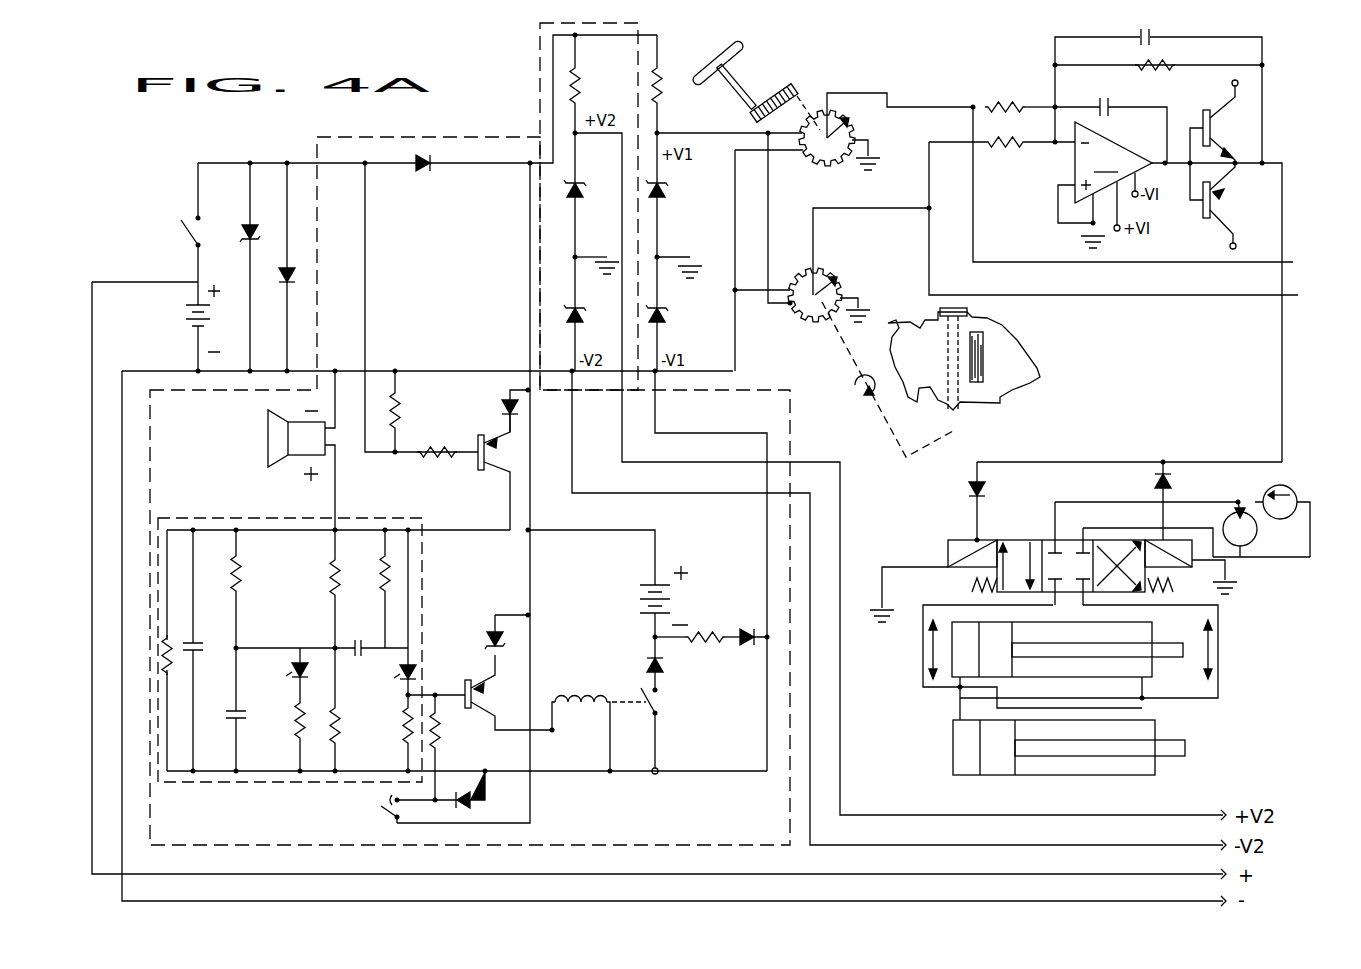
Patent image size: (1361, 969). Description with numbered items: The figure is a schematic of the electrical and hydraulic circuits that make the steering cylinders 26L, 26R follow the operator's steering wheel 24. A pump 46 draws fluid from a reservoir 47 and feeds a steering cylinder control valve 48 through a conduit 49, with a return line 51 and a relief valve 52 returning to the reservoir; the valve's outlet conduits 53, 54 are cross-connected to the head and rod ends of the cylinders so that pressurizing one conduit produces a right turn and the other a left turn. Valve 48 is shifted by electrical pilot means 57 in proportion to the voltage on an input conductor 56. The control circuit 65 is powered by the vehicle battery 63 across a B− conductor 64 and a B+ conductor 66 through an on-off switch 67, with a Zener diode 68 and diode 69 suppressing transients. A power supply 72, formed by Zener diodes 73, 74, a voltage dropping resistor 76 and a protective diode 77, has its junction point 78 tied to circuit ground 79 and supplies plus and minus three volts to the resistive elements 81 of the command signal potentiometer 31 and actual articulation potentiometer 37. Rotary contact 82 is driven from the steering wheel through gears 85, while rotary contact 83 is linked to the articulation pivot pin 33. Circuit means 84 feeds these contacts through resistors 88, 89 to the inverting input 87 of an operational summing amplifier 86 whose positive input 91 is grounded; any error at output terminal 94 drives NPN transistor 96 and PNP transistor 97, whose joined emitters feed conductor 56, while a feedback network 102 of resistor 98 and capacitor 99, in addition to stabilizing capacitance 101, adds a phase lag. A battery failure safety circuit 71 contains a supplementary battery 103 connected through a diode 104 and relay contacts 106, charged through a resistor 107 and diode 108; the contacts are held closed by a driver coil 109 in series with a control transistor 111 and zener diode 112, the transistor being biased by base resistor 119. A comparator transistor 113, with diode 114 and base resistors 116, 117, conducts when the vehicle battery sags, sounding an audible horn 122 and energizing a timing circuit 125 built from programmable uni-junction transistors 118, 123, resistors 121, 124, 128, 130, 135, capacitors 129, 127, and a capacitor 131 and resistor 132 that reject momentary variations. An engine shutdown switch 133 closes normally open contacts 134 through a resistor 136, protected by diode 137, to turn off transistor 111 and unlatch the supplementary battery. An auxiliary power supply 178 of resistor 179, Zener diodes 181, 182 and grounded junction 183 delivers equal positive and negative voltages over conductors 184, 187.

The steering wheel 24 is at (739, 46).
The left steering cylinder 26L is at (1157, 672).
The right steering cylinder 26R is at (1004, 776).
The command signal potentiometer 31 is at (854, 127).
The articulation pivot pin 33 is at (955, 415).
The actual articulation signal potentiometer 37 is at (844, 295).
The pump 46 is at (1268, 490).
The reservoir 47 is at (1297, 560).
The steering cylinder control valve 48 is at (1038, 528).
The conduit 49 is at (1125, 500).
The return line 51 is at (1145, 527).
The relief valve 52 is at (1222, 523).
The outlet conduit 53 is at (922, 652).
The outlet conduit 54 is at (1221, 651).
The input conductor 56 is at (1282, 342).
The electrical pilot means 57 is at (967, 502).
The vehicle battery 63 is at (184, 326).
The B− conductor 64 is at (453, 369).
The control circuit 65 is at (512, 102).
The B+ conductor 66 is at (211, 163).
The on-off switch 67 is at (183, 237).
The Zener diode 68 is at (244, 226).
The diode 69 is at (279, 273).
The battery failure safety circuit 71 is at (142, 489).
The power supply 72 is at (653, 122).
The Zener diode 73 is at (668, 187).
The Zener diode 74 is at (668, 314).
The voltage dropping resistor 76 is at (661, 69).
The diode 77 is at (424, 172).
The junction point 78 is at (658, 254).
The circuit ground 79 is at (676, 280).
The resistive element 81 is at (850, 120).
The rotary contact 82 is at (843, 167).
The rotary contact 83 is at (814, 269).
The circuit means 84 is at (1263, 271).
The gears 85 is at (742, 117).
The operational summing amplifier 86 is at (1113, 162).
The inverting input 87 is at (1054, 145).
The resistor 88 is at (1004, 100).
The resistor 89 is at (1008, 150).
The positive input 91 is at (1058, 209).
The output terminal 94 is at (1164, 160).
The NPN transistor 96 is at (1212, 128).
The PNP transistor 97 is at (1212, 200).
The resistor 98 is at (1138, 66).
The capacitor 99 is at (1140, 34).
The stabilizing capacitance 101 is at (1100, 100).
The feedback network 102 is at (1196, 88).
The supplementary battery 103 is at (645, 596).
The diode 104 is at (653, 660).
The relay contacts 106 is at (660, 702).
The resistor 107 is at (692, 648).
The diode 108 is at (736, 627).
The driver coil 109 is at (598, 694).
The control transistor 111 is at (467, 680).
The zener diode 112 is at (488, 628).
The comparator transistor 113 is at (478, 441).
The diode 114 is at (506, 398).
The base resistor 116 is at (437, 461).
The resistor 117 is at (400, 404).
The programmable uni-junction transistor 118 is at (395, 674).
The base resistor 119 is at (400, 721).
The resistor 121 is at (383, 561).
The audible horn 122 is at (280, 465).
The programmable uni-junction transistor 123 is at (291, 676).
The resistor 124 is at (331, 578).
The timing circuit 125 is at (400, 512).
The coupling capacitor 127 is at (349, 646).
The resistor 128 is at (239, 575).
The capacitor 129 is at (250, 697).
The resistor 130 is at (296, 730).
The capacitor 131 is at (197, 642).
The resistor 132 is at (169, 667).
The engine shutdown switch 133 is at (380, 817).
The normally open contacts 134 is at (395, 799).
The resistor 135 is at (339, 734).
The resistor 136 is at (441, 740).
The protective diode 137 is at (470, 804).
The auxiliary power supply 178 is at (595, 400).
The resistor 179 is at (577, 78).
The Zener diode 181 is at (566, 188).
The Zener diode 182 is at (566, 314).
The junction 183 is at (572, 257).
The conductor 184 is at (842, 510).
The conductor 187 is at (673, 495).